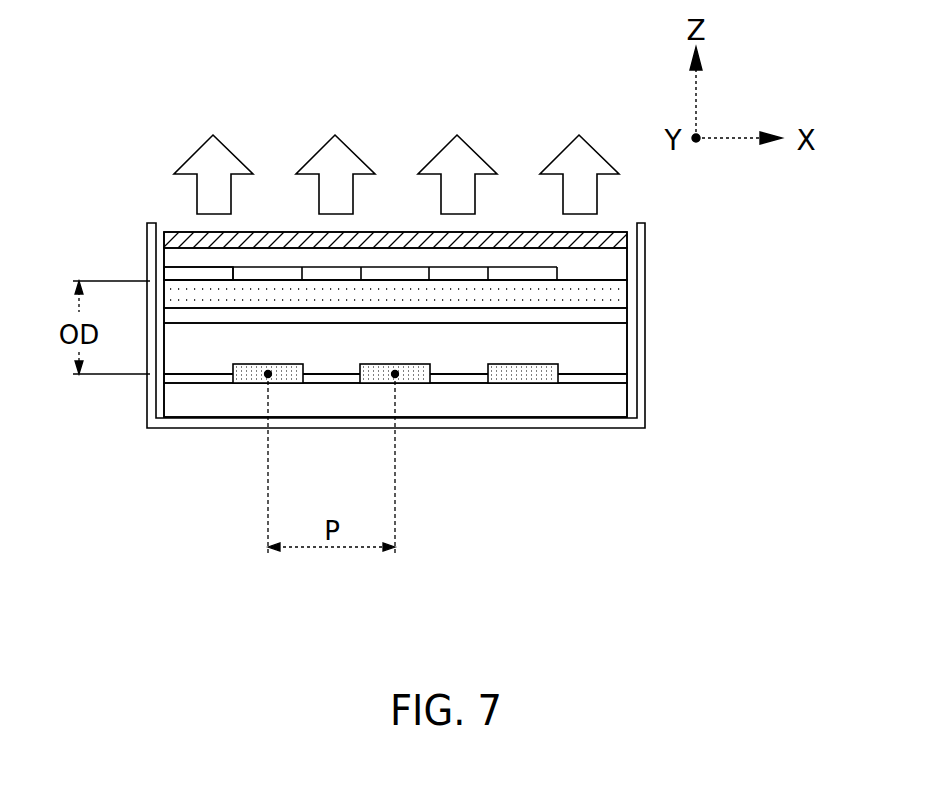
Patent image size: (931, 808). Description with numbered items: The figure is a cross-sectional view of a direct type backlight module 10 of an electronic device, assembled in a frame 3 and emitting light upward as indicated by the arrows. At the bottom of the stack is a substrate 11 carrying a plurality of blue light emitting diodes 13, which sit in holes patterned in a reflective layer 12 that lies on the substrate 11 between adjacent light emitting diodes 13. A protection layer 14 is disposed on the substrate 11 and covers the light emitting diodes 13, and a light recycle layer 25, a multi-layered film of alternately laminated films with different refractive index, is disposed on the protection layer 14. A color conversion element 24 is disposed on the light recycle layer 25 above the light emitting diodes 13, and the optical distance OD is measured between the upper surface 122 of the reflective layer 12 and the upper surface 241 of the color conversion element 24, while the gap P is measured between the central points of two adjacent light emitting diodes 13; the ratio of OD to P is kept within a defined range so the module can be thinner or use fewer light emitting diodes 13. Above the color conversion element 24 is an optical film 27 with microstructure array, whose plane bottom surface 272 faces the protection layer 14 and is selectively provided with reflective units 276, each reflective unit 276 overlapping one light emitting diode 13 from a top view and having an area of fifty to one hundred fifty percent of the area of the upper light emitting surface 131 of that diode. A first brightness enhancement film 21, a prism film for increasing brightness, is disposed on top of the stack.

The frame 3 is at (150, 408).
The backlight module 10 is at (733, 205).
The first brightness enhancement film 21 is at (627, 240).
The optical film with microstructure array 27 is at (627, 262).
The reflective unit 276 is at (557, 267).
The bottom surface 272 is at (216, 270).
The color conversion element 24 is at (627, 297).
The upper surface 241 is at (173, 281).
The light recycle layer 25 is at (627, 314).
The protection layer 14 is at (627, 343).
The reflective layer 12 is at (627, 373).
The upper surface 122 is at (452, 374).
The substrate 11 is at (627, 398).
The light emitting diodes 13 is at (540, 378).
The upper light emitting surface 131 is at (262, 364).